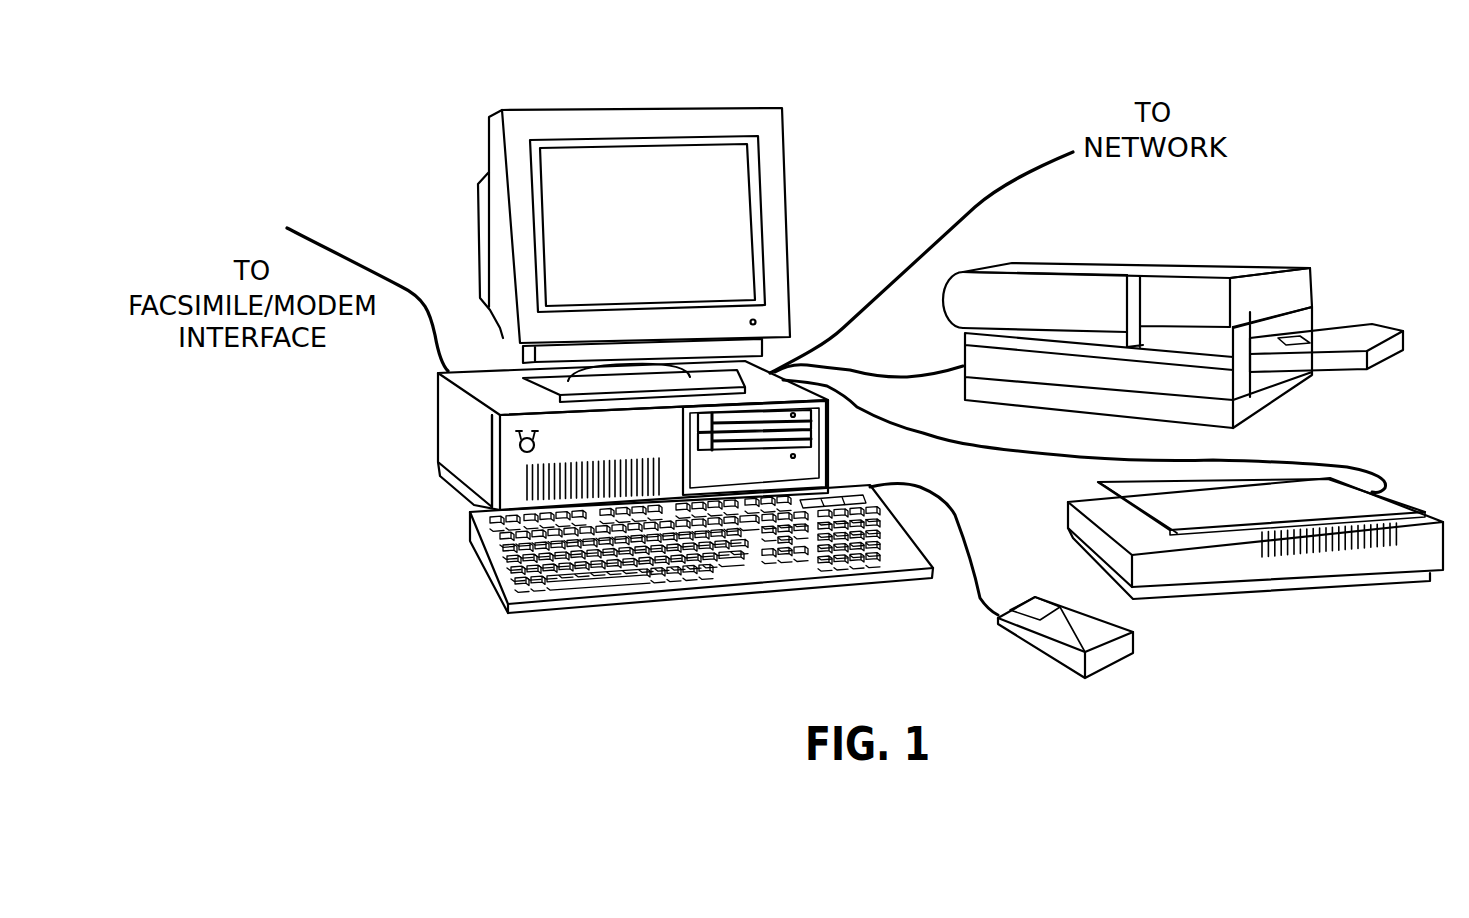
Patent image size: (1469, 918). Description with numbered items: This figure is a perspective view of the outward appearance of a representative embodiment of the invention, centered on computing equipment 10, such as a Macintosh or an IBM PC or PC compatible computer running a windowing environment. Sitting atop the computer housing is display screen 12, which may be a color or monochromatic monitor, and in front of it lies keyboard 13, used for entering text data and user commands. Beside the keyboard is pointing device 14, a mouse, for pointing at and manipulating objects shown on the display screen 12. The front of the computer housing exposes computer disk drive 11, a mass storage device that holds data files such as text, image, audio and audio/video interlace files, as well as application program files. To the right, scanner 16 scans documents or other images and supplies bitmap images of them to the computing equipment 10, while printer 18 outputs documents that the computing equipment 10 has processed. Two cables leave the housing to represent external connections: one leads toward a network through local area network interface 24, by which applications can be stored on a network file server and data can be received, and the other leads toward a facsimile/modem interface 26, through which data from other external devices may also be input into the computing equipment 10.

The computing equipment 10 is at (908, 127).
The computer disk drive 11 is at (783, 442).
The display screen 12 is at (670, 107).
The keyboard 13 is at (578, 585).
The pointing device 14 is at (1103, 670).
The scanner 16 is at (1295, 590).
The printer 18 is at (1083, 260).
The local area network interface 24 is at (1003, 178).
The facsimile/modem interface 26 is at (401, 281).